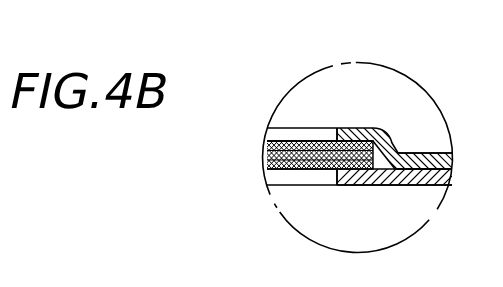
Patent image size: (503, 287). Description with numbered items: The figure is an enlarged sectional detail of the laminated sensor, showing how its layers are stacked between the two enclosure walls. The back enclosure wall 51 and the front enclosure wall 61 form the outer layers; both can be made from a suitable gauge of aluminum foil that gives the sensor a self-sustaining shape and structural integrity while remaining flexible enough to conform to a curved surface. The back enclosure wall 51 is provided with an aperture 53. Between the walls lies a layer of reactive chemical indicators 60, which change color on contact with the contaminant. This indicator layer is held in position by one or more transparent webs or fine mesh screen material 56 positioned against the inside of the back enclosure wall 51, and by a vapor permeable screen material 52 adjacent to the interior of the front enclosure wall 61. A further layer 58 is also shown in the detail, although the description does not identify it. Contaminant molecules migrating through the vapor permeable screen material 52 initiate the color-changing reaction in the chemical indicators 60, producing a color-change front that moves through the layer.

The back enclosure wall 51 is at (425, 153).
The vapor permeable screen material 52 is at (267, 167).
The aperture 53 is at (277, 130).
The transparent web or fine mesh screen material 56 is at (323, 128).
The interface layer 58 is at (267, 154).
The reactive chemical indicators 60 is at (267, 158).
The front enclosure wall 61 is at (430, 186).